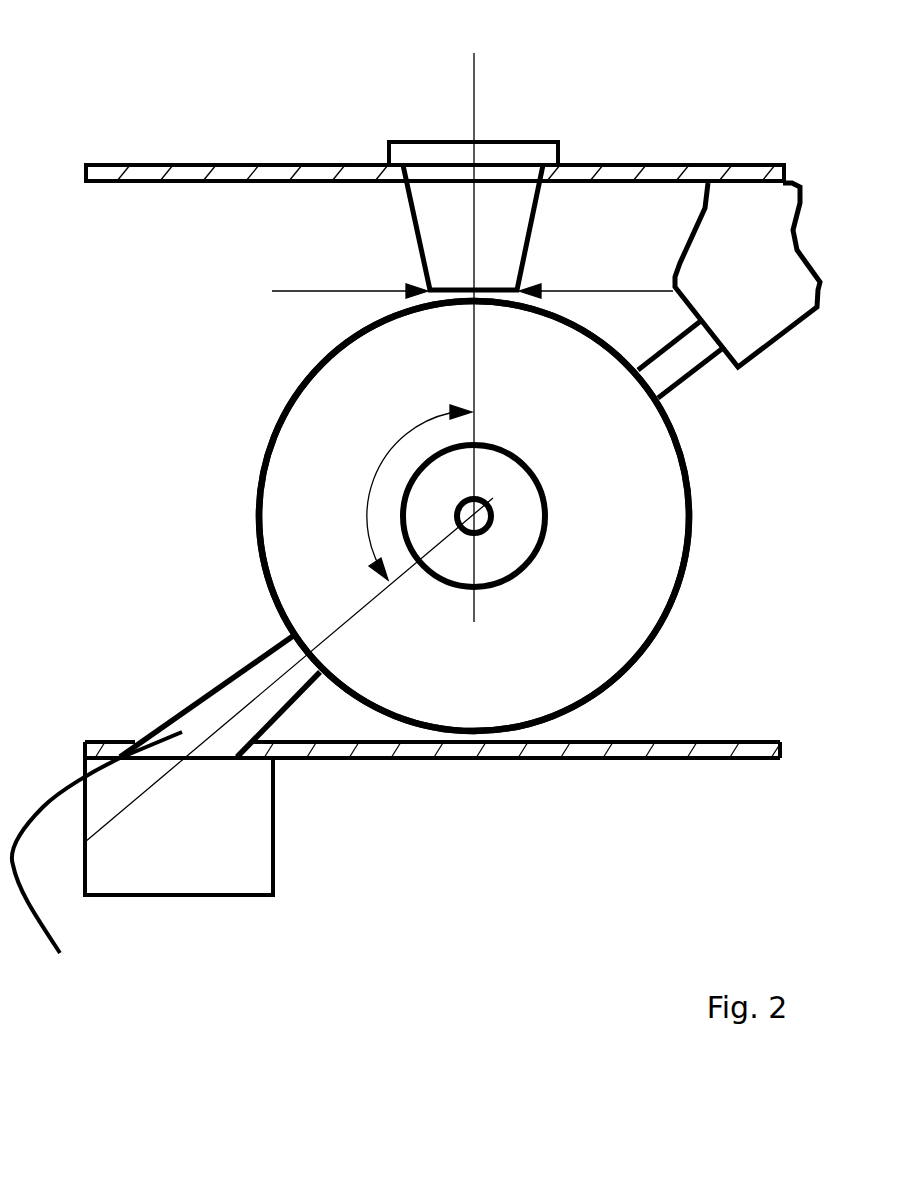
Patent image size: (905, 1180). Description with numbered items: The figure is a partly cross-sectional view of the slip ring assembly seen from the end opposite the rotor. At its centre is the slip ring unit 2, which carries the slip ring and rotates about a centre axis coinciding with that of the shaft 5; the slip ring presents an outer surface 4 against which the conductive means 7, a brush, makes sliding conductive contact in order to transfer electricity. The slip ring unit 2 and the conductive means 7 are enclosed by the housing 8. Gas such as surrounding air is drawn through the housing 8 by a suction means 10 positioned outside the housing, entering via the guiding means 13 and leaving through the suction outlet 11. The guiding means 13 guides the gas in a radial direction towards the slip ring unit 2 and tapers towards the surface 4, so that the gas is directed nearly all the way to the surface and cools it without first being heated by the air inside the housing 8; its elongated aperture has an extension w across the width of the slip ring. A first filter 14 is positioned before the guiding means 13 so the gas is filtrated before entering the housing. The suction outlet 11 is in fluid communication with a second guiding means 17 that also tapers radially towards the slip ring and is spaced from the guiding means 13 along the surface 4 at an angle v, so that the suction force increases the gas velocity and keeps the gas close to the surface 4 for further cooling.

The slip ring unit 2 is at (503, 690).
The outer surface 4 is at (625, 673).
The shaft 5 is at (480, 518).
The conductive means 7 is at (665, 372).
The housing 8 is at (173, 163).
The suction means 10 is at (257, 848).
The suction outlet 11 is at (223, 745).
The guiding means 13 is at (475, 213).
The first filter 14 is at (397, 157).
The second guiding means 17 is at (97, 860).